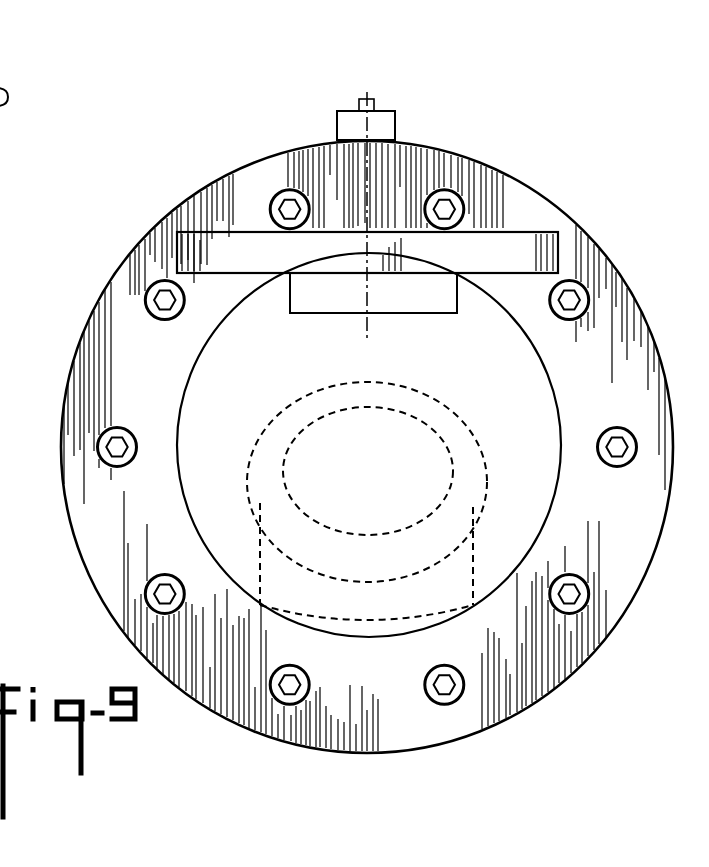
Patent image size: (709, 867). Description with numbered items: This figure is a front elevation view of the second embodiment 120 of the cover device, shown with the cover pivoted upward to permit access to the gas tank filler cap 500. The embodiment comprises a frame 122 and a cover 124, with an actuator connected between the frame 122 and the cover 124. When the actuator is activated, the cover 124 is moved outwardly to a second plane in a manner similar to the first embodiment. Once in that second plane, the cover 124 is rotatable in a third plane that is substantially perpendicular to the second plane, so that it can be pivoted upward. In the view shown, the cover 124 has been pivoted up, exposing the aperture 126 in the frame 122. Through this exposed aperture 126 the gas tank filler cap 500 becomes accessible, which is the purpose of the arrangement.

The second embodiment 120 is at (603, 114).
The frame 122 is at (100, 602).
The cover 124 is at (248, 232).
The aperture 126 is at (473, 393).
The gas tank filler cap 500 is at (285, 412).